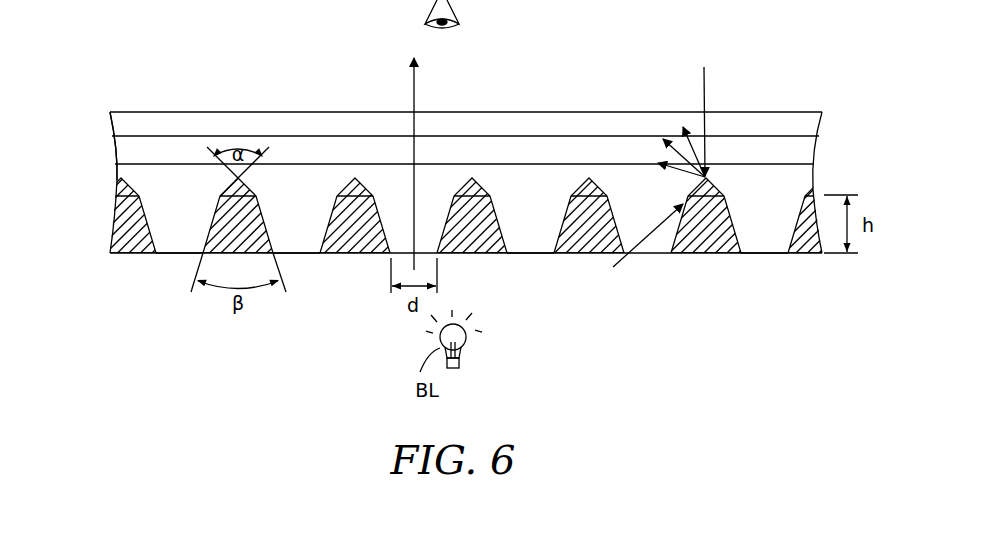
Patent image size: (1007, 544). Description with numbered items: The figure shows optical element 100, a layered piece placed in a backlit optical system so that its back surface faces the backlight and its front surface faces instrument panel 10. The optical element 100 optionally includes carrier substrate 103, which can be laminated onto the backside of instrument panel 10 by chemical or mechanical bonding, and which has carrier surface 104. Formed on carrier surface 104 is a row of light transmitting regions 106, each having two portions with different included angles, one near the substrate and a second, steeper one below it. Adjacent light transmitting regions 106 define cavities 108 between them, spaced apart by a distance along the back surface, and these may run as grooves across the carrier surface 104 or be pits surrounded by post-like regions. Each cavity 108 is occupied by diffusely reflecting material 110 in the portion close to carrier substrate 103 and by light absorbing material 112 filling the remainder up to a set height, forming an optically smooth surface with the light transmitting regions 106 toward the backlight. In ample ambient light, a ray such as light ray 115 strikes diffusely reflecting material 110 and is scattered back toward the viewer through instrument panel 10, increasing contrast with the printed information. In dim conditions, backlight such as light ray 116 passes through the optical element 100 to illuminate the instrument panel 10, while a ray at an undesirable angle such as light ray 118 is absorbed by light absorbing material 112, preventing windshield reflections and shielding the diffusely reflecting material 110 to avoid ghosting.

The optical element 100 is at (165, 56).
The instrument panel 10 is at (275, 120).
The carrier surface 104 is at (178, 162).
The carrier substrate 103 is at (115, 147).
The light transmitting regions 106 is at (390, 192).
The cavities 108 is at (354, 172).
The diffusely reflecting material 110 is at (117, 185).
The light absorbing material 112 is at (118, 237).
The light ray 115 is at (706, 80).
The light ray 116 is at (416, 90).
The light ray 118 is at (624, 260).